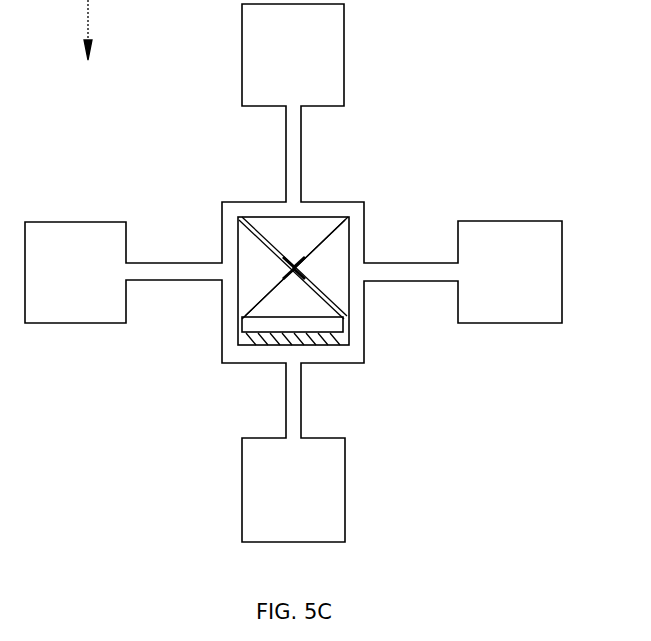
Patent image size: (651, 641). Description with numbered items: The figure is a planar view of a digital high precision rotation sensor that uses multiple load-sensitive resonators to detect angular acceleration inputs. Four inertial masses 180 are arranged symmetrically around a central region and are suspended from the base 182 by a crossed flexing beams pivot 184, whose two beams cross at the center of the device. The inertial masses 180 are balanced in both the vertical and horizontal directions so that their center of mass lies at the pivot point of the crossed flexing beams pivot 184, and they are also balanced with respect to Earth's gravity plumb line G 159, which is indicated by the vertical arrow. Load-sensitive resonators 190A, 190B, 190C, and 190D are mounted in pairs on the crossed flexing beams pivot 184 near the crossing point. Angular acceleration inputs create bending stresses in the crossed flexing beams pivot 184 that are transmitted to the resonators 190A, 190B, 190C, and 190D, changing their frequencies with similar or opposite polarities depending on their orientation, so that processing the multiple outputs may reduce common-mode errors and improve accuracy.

The Earth's gravity plumb line G 159 is at (68, 50).
The inertial masses 180 is at (258, 42).
The base 182 is at (278, 326).
The crossed flexing beams pivot 184 is at (256, 242).
The load-sensitive resonator 190A is at (297, 262).
The load-sensitive resonator 190B is at (303, 268).
The load-sensitive resonator 190C is at (302, 274).
The load-sensitive resonator 190D is at (296, 280).